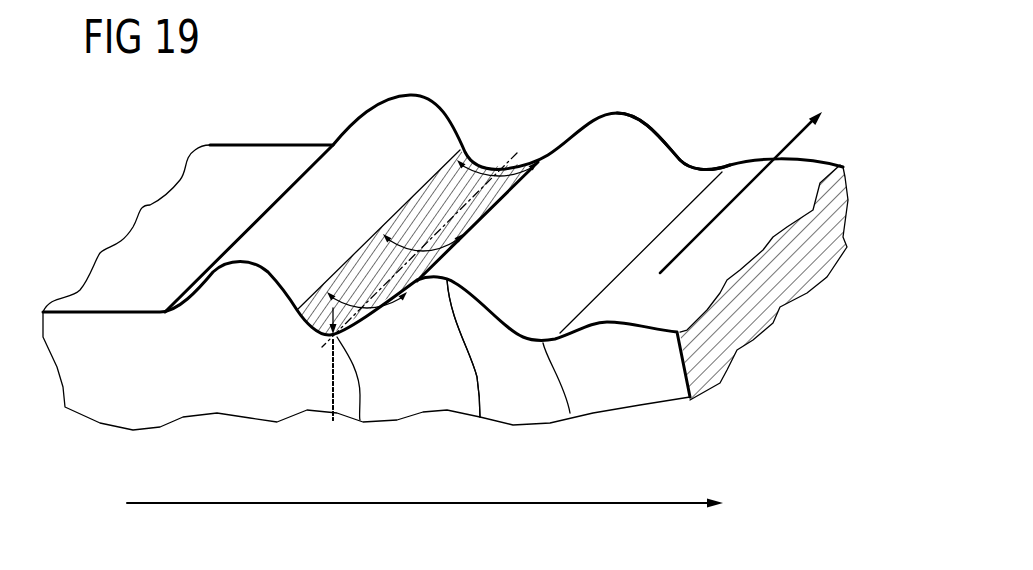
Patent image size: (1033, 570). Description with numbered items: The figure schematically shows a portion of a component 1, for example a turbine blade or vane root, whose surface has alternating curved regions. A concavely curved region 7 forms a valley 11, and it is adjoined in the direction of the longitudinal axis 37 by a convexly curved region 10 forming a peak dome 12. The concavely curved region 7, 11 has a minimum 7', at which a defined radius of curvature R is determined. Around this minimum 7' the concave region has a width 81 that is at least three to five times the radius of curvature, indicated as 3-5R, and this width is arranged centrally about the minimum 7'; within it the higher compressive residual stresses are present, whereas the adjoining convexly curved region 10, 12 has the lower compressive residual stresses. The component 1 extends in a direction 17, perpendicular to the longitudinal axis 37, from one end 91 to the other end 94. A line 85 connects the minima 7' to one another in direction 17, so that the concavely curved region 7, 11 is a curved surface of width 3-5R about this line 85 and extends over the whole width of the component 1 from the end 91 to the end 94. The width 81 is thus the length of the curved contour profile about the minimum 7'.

The component 1 is at (95, 195).
The width of the concavely curved region 81 is at (473, 157).
The line connecting the minima 85 is at (500, 202).
The width of three to five times the radius of curvature 3-5R is at (497, 165).
The radius of curvature R is at (320, 317).
The concavely curved region 7 is at (275, 406).
The valley 11 is at (308, 346).
The minimum 7' is at (368, 399).
The convexly curved region 10 is at (480, 417).
The peak dome 12 is at (480, 417).
The end 91 is at (570, 413).
The end 94 is at (705, 170).
The direction 17 is at (753, 177).
The longitudinal axis 37 is at (443, 505).